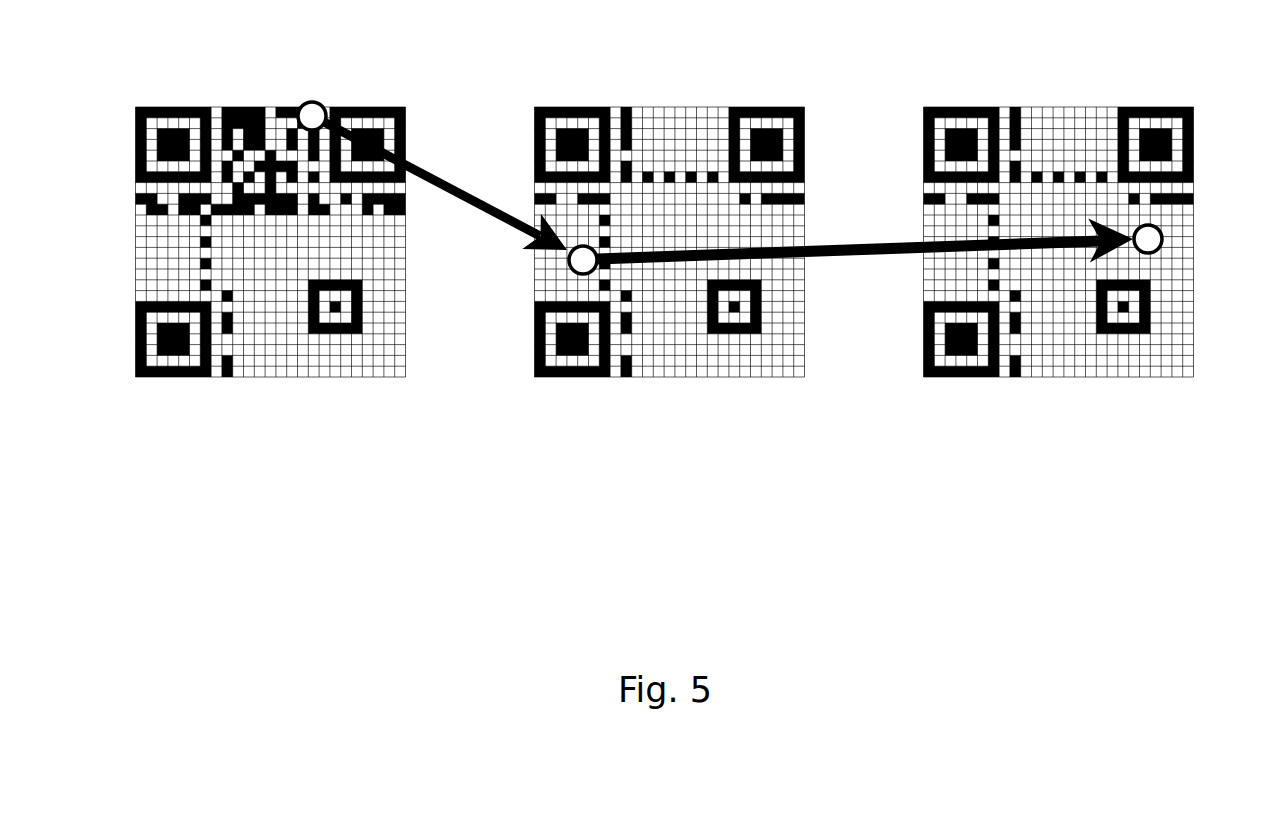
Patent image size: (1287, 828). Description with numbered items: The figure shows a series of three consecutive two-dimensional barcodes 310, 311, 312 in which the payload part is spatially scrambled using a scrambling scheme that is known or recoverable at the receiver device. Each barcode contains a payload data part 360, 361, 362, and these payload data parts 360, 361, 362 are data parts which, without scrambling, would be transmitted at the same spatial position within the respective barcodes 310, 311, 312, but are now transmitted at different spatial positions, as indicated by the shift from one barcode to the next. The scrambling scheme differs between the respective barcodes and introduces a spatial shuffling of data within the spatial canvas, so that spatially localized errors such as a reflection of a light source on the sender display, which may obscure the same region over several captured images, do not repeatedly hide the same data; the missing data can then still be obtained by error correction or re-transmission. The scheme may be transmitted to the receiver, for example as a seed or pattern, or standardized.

The 2D barcode 310 is at (380, 376).
The 2D barcode 311 is at (775, 376).
The 2D barcode 312 is at (1164, 376).
The payload data part 360 is at (310, 102).
The payload data part 361 is at (571, 270).
The payload data part 362 is at (1163, 243).